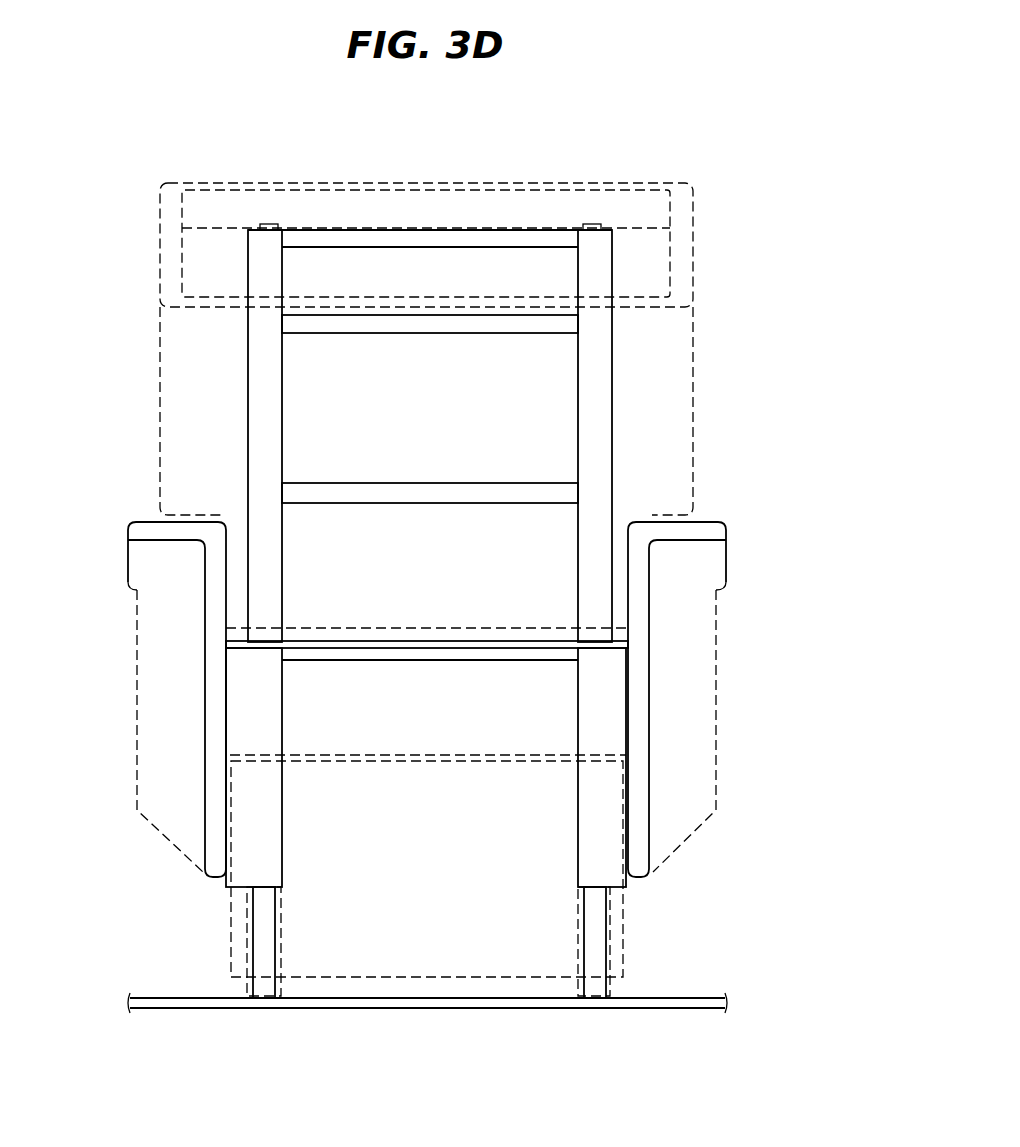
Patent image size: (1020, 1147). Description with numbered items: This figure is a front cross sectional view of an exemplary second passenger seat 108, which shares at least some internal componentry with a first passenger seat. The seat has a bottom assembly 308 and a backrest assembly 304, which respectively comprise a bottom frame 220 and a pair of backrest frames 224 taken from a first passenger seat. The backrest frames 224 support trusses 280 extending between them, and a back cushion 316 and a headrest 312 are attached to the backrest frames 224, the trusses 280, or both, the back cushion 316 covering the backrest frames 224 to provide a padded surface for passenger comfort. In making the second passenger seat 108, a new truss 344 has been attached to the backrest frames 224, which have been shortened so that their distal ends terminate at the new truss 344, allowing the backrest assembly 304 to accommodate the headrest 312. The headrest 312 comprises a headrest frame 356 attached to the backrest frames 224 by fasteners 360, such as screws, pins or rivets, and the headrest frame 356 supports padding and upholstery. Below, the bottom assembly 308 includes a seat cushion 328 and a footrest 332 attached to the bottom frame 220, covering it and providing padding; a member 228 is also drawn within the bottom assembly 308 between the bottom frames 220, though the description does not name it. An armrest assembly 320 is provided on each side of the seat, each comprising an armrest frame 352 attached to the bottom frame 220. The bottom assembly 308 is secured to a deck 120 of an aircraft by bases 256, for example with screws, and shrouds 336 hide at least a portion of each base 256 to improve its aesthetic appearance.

The second passenger seat 108 is at (416, 140).
The deck 120 is at (653, 998).
The bottom frame 220 is at (282, 677).
The backrest frame 224 is at (248, 258).
The seat pan 228 is at (398, 664).
The base 256 is at (253, 965).
The truss 280 is at (418, 334).
The backrest assembly 304 is at (722, 380).
The bottom assembly 308 is at (747, 715).
The headrest 312 is at (190, 312).
The back cushion 316 is at (155, 393).
The armrest assembly 320 is at (118, 693).
The seat cushion 328 is at (385, 618).
The footrest 332 is at (313, 980).
The shroud 336 is at (240, 948).
The new truss 344 is at (428, 248).
The armrest frame 352 is at (128, 530).
The headrest frame 356 is at (160, 250).
The fastener 360 is at (268, 224).